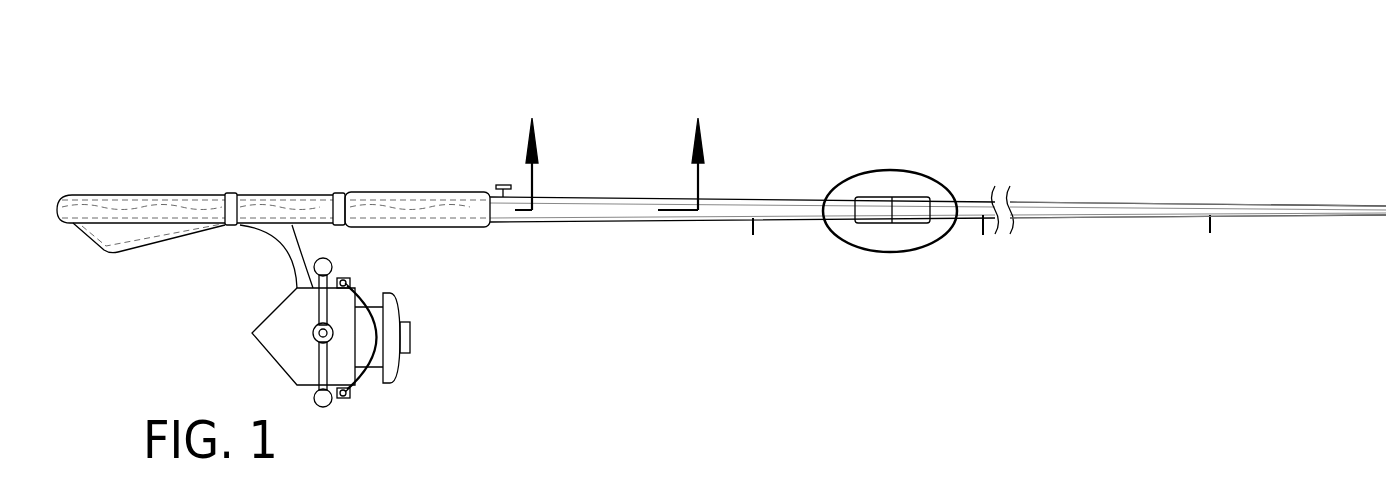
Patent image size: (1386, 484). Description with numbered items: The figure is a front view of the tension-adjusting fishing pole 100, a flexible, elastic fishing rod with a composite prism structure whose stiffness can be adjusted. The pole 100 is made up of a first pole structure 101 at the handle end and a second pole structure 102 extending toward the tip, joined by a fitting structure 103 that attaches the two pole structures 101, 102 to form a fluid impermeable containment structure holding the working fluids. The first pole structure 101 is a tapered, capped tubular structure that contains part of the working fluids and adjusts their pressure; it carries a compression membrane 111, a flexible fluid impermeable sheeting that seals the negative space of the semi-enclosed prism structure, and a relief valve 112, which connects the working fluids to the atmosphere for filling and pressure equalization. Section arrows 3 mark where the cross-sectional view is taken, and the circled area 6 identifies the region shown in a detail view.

The tension-adjusting fishing pole 100 is at (1235, 150).
The first pole structure 101 is at (355, 174).
The second pole structure 102 is at (1133, 203).
The fitting structure 103 is at (877, 205).
The compression membrane 111 is at (122, 235).
The relief valve 112 is at (497, 188).
The section line 3- 3 is at (611, 141).
The detail view area 6 is at (948, 187).